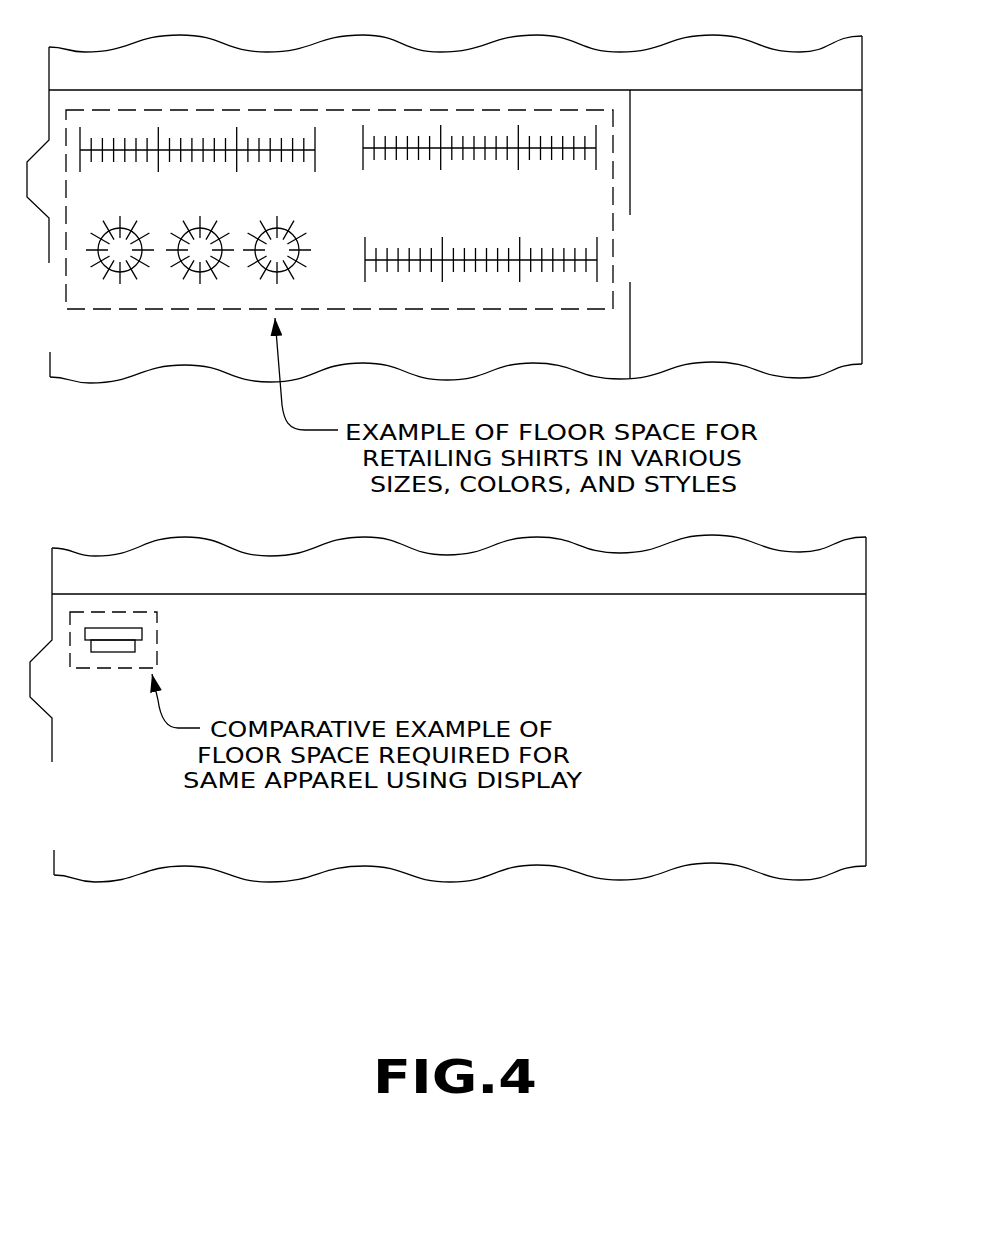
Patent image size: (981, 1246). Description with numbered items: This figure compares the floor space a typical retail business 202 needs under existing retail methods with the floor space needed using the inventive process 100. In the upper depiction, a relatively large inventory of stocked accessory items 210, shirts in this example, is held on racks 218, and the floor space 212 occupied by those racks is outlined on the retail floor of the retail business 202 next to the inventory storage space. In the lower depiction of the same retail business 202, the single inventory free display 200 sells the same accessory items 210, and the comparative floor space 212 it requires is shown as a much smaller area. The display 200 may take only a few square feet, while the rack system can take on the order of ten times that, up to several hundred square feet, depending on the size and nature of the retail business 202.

The inventive process 100 is at (43, 608).
The display 200 is at (164, 637).
The retail business 202 is at (463, 352).
The accessory items 210 is at (127, 140).
The floor space 212 is at (353, 297).
The racks 218 is at (176, 174).